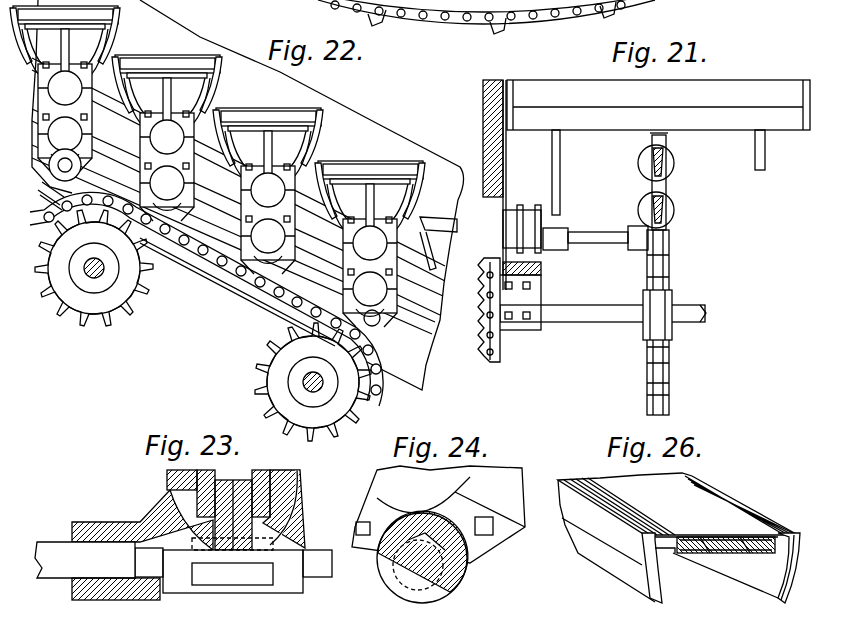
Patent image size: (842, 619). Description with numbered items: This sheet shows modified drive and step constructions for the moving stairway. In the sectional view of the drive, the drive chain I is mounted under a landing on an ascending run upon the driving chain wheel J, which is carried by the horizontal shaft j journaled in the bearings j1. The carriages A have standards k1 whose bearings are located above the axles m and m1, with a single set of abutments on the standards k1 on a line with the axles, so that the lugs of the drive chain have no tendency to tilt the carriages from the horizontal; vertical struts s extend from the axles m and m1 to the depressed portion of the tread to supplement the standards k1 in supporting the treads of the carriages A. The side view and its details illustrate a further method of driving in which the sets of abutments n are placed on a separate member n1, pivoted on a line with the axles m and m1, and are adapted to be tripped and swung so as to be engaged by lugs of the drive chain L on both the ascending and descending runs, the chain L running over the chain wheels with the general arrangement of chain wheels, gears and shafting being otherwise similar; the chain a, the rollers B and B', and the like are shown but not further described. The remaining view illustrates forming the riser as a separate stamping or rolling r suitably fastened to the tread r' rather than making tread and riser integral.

In FIG. 22, the carriage A is at (233, 166).
In FIG. 21, the carriage A is at (658, 96).
In FIG. 22, the standard k1 is at (244, 180).
In FIG. 21, the standard k1 is at (648, 185).
In FIG. 23, the standard k1 is at (163, 488).
In FIG. 22, the axle m1 is at (80, 166).
In FIG. 21, the axle m1 is at (605, 232).
In FIG. 22, the abutment n is at (72, 178).
In FIG. 23, the abutment n is at (230, 565).
In FIG. 24, the abutment n is at (390, 580).
In FIG. 22, the axle m is at (43, 194).
In FIG. 23, the axle m is at (62, 545).
In FIG. 22, the chain a is at (206, 299).
In FIG. 22, the drive chain L is at (236, 288).
In FIG. 22, the separate member n1 is at (383, 333).
In FIG. 23, the separate member n1 is at (252, 597).
In FIG. 24, the separate member n1 is at (466, 565).
In FIG. 21, the vertical strut s is at (561, 176).
In FIG. 21, the roller B is at (667, 163).
In FIG. 21, the roller B' is at (669, 210).
In FIG. 21, the drive chain I is at (672, 277).
In FIG. 21, the driving chain wheel J is at (680, 333).
In FIG. 21, the horizontal shaft j is at (592, 325).
In FIG. 21, the bearing j1 is at (527, 337).
In FIG. 26, the separate stamping or rolling r is at (721, 568).
In FIG. 26, the tread r' is at (726, 564).